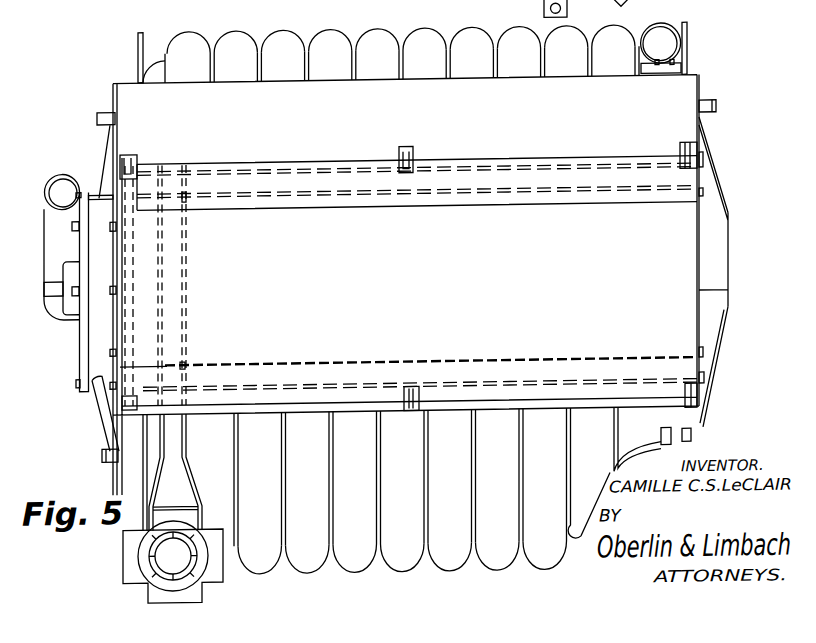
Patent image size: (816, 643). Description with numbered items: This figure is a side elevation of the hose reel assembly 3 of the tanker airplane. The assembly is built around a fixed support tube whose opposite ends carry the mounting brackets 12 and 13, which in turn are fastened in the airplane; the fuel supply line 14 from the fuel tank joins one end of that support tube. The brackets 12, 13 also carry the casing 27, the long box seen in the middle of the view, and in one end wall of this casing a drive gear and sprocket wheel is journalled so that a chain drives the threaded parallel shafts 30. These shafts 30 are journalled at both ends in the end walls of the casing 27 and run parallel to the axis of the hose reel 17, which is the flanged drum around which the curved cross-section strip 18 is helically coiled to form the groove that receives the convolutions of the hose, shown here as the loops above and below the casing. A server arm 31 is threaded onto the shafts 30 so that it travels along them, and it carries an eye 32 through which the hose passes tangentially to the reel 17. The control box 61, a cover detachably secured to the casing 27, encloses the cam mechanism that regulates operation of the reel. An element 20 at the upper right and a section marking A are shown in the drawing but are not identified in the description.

The mounting bracket 12 is at (717, 193).
The mounting bracket 13 is at (108, 147).
The fuel supply line 14 is at (46, 214).
The hose reel 17 is at (138, 50).
The curved cross-section strip 18 is at (448, 73).
The tube end bracket 20 is at (662, 45).
The casing 27 is at (404, 284).
The threaded parallel shafts 30 is at (271, 164).
The server arm 31 is at (173, 310).
The eye 32 is at (196, 540).
The control box 61 is at (289, 216).
The hose reel assembly 3 is at (322, 10).
The section line A is at (103, 567).